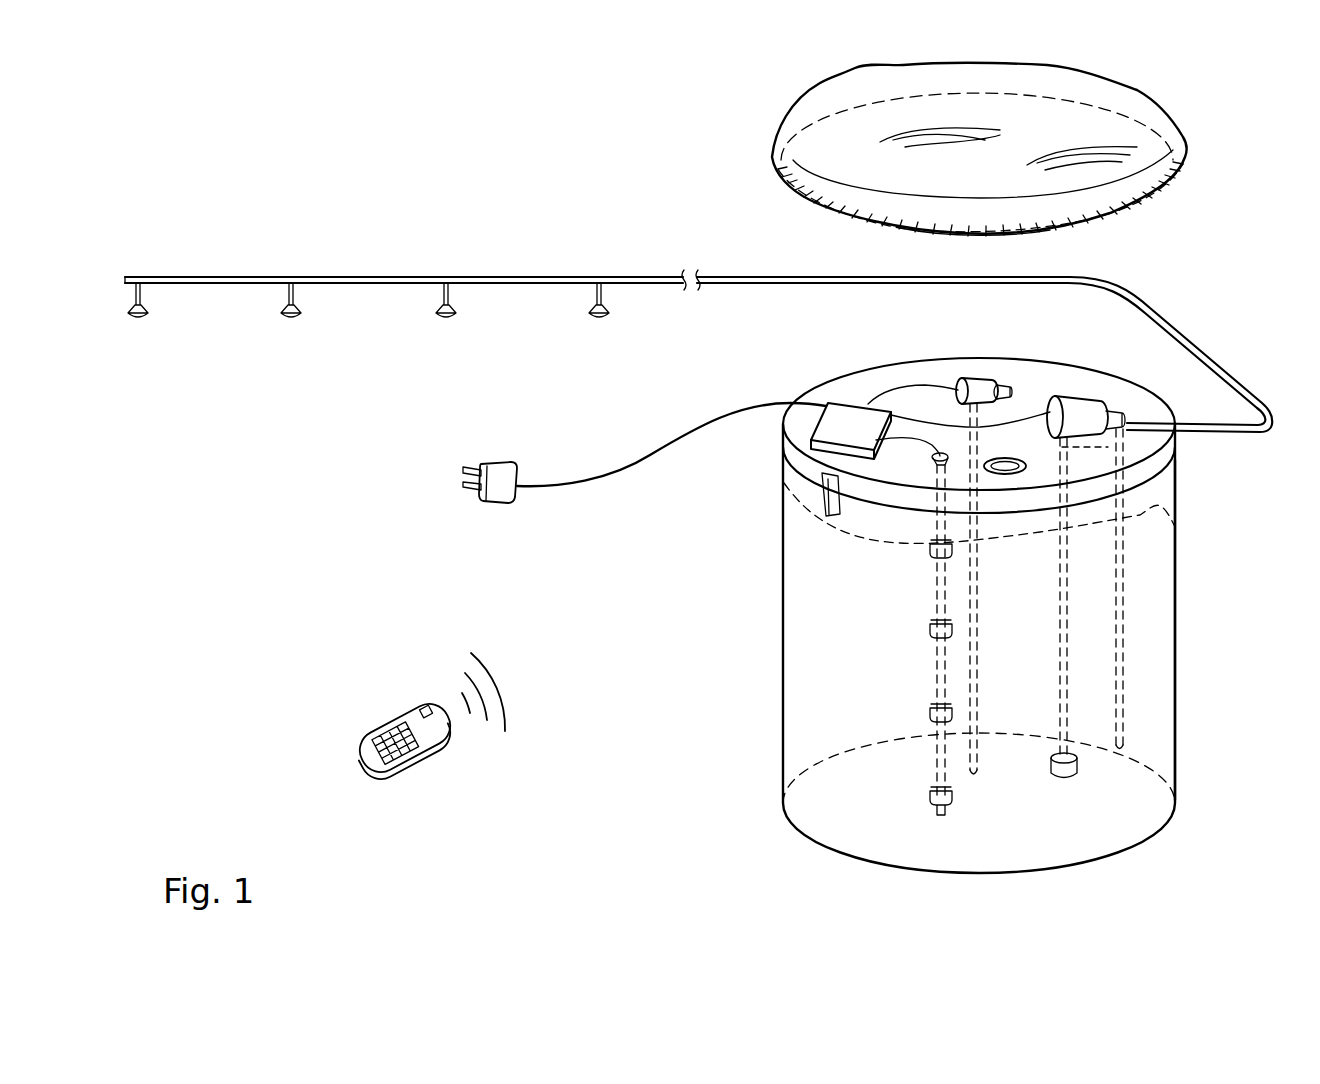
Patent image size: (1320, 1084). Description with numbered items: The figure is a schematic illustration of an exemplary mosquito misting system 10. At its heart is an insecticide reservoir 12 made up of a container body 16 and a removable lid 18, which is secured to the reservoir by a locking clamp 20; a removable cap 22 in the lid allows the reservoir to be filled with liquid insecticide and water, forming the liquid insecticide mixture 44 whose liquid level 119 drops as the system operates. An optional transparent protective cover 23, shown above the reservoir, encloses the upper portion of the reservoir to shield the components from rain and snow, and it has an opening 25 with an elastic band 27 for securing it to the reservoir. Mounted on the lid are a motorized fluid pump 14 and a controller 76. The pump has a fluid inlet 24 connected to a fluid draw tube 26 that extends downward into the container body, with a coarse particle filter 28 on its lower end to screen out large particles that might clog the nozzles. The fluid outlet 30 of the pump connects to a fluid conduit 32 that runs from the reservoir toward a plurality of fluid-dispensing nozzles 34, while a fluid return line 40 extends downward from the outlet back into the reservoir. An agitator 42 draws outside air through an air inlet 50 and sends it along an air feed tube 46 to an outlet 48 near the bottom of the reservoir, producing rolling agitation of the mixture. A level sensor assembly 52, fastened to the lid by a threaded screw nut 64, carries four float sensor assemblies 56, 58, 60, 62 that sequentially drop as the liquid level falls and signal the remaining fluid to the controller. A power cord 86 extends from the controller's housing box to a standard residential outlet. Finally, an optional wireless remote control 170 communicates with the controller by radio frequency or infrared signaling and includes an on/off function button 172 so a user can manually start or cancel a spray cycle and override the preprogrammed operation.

The misting system 10 is at (386, 162).
The insecticide reservoir 12 is at (1037, 648).
The motorized fluid pump 14 is at (1124, 383).
The container body 16 is at (1177, 676).
The removable lid 18 is at (822, 393).
The locking clamp 20 is at (822, 506).
The removable cap 22 is at (998, 459).
The transparent protective cover 23 is at (922, 157).
The fluid inlet 24 is at (1177, 469).
The opening 25 is at (1133, 233).
The fluid draw tube 26 is at (1069, 632).
The elastic band 27 is at (845, 213).
The coarse particle filter 28 is at (1068, 778).
The fluid outlet 30 is at (1112, 420).
The fluid conduit 32 is at (1200, 330).
The fluid-dispensing nozzles 34 is at (138, 318).
The fluid return line 40 is at (1124, 563).
The agitator 42 is at (987, 353).
The liquid insecticide mixture 44 is at (846, 694).
The air feed tube 46 is at (1011, 610).
The outlet 48 is at (975, 775).
The air inlet 50 is at (1004, 391).
The level sensor assembly 52 is at (877, 642).
The float sensor assembly 56 is at (926, 553).
The float sensor assembly 58 is at (926, 636).
The float sensor assembly 60 is at (926, 718).
The float sensor assembly 62 is at (926, 800).
The threaded screw nut 64 is at (932, 459).
The controller 76 is at (845, 395).
The power cord 86 is at (606, 470).
The liquid level 119 is at (1178, 522).
The wireless remote control 170 is at (388, 692).
The on/off function button 172 is at (424, 712).